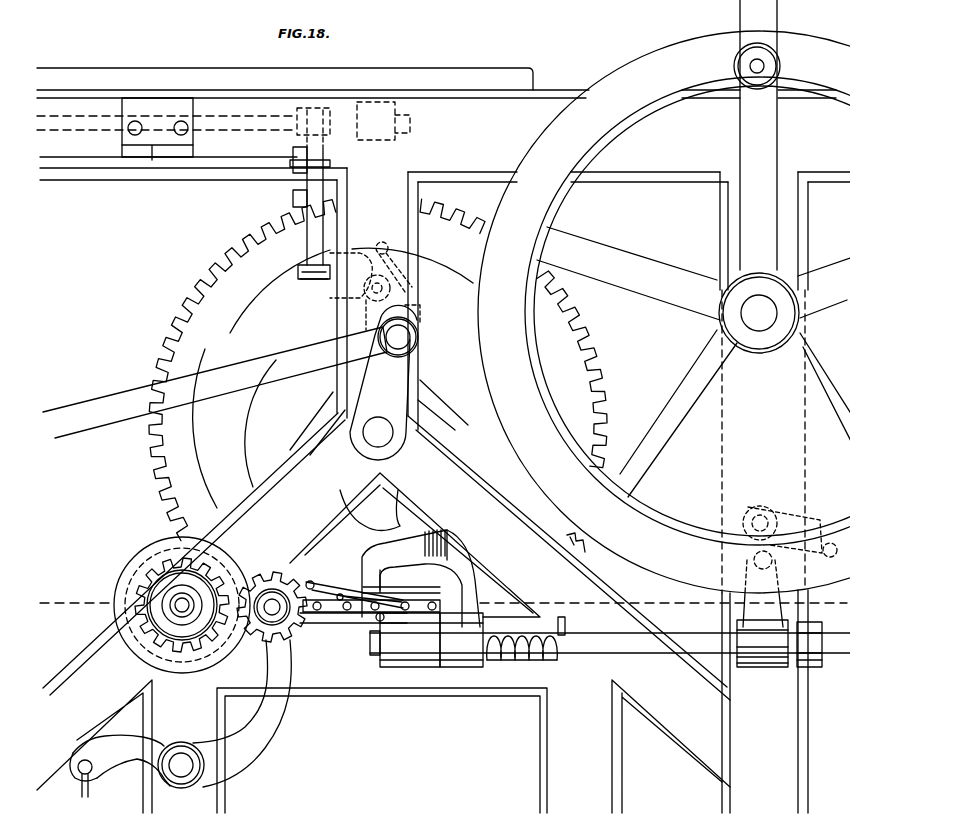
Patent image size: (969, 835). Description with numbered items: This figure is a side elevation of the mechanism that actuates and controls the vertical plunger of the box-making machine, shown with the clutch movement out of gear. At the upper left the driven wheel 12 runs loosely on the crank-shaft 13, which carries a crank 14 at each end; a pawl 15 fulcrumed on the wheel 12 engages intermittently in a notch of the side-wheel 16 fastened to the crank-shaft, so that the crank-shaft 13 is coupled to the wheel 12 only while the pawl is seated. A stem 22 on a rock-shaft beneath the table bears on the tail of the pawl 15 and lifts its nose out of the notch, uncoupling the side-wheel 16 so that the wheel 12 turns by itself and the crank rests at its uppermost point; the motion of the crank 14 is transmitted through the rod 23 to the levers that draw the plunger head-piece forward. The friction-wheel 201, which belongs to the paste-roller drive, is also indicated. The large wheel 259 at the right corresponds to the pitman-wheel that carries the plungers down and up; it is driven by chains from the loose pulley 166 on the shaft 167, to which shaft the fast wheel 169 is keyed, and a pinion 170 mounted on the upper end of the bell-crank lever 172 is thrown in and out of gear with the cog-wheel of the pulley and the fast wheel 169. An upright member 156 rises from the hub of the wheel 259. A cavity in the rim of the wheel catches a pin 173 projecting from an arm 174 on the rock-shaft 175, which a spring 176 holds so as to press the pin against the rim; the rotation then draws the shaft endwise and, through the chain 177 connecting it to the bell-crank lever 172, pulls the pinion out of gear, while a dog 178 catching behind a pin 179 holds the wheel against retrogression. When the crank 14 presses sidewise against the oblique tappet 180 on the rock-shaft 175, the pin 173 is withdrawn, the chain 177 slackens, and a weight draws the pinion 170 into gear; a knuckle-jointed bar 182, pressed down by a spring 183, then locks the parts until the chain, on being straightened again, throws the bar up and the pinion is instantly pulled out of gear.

The friction-wheel 201 is at (223, 121).
The stem 22 is at (310, 194).
The wheel 12 is at (378, 370).
The rod 23 is at (215, 382).
The side-wheel 16 is at (416, 337).
The crank 14 is at (383, 382).
The crank-shaft 13 is at (378, 432).
The pawl 15 is at (375, 286).
The drive wheel 259 is at (723, 312).
The shaft 156 is at (757, 135).
The dog 178 is at (782, 529).
The pin 179 is at (840, 551).
The pin 173 is at (762, 572).
The arm 174 is at (779, 630).
The rock-shaft 175 is at (610, 640).
The spring 176 is at (526, 637).
The oblique tappet 180 is at (421, 578).
The chain 177 is at (370, 610).
The knuckle-jointed bar 182 is at (354, 589).
The spring 183 is at (369, 592).
The loose pulley 166 is at (182, 605).
The fast wheel 169 is at (182, 605).
The shaft 167 is at (182, 605).
The pinion 170 is at (272, 596).
The bell-crank lever 172 is at (180, 718).